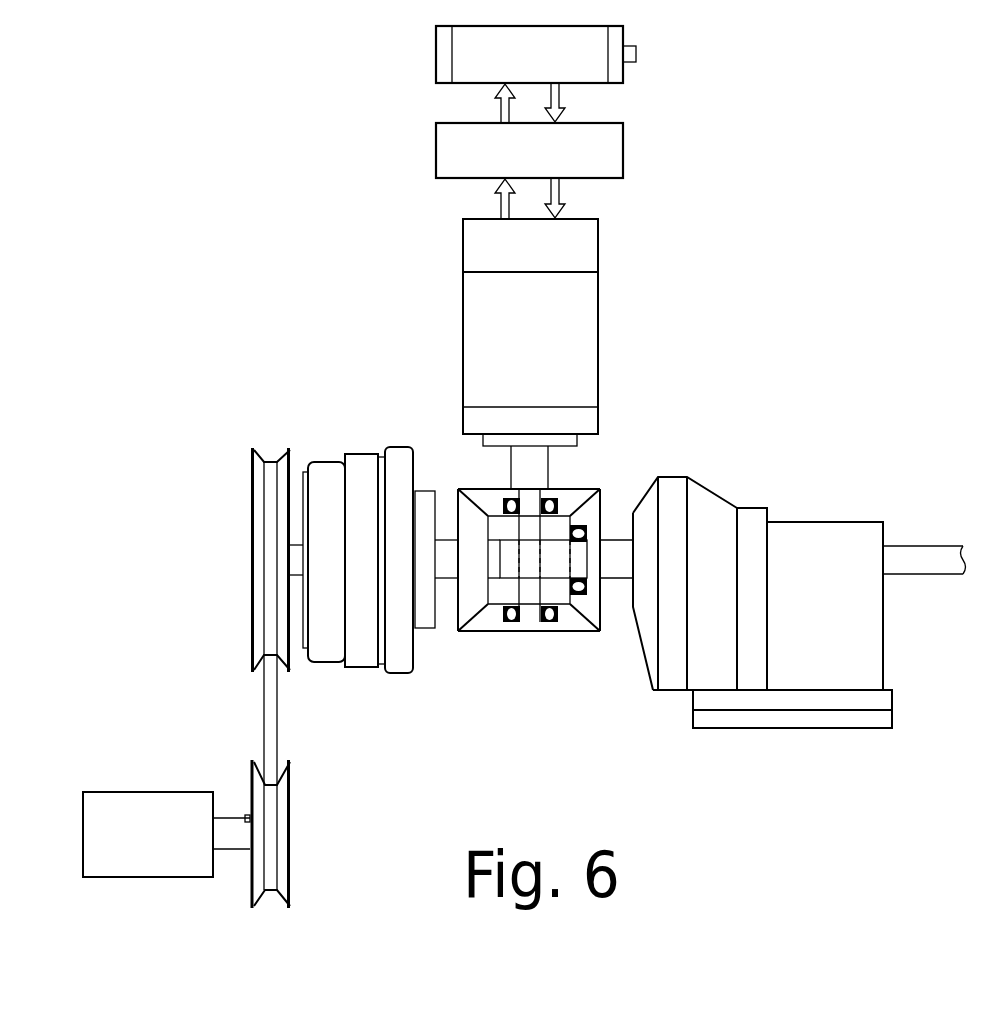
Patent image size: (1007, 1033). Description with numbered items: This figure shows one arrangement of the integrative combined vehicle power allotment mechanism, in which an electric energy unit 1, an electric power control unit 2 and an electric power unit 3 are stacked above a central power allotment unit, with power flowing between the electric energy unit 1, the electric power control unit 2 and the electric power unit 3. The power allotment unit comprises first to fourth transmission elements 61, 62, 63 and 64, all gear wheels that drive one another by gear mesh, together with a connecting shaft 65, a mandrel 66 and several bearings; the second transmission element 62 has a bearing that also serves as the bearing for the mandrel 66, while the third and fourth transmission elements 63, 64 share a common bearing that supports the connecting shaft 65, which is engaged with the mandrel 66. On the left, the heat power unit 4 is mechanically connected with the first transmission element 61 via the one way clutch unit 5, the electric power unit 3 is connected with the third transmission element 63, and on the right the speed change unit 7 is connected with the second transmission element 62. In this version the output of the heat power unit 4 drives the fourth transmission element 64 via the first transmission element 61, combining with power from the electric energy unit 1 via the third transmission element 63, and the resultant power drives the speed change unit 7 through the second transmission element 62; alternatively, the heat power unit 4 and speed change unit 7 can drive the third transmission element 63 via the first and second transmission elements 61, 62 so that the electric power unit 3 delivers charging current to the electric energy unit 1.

The electric energy unit 1 is at (597, 57).
The electric power control unit 2 is at (597, 147).
The electric power unit 3 is at (578, 305).
The heat power unit 4 is at (144, 826).
The one-way clutch unit 5 is at (363, 602).
The speed change unit 7 is at (716, 512).
The first transmission element 61 is at (473, 588).
The second transmission element 62 is at (593, 603).
The third transmission element 63 is at (473, 495).
The fourth transmission element 64 is at (494, 623).
The connecting shaft 65 is at (530, 595).
The mandrel 66 is at (553, 566).